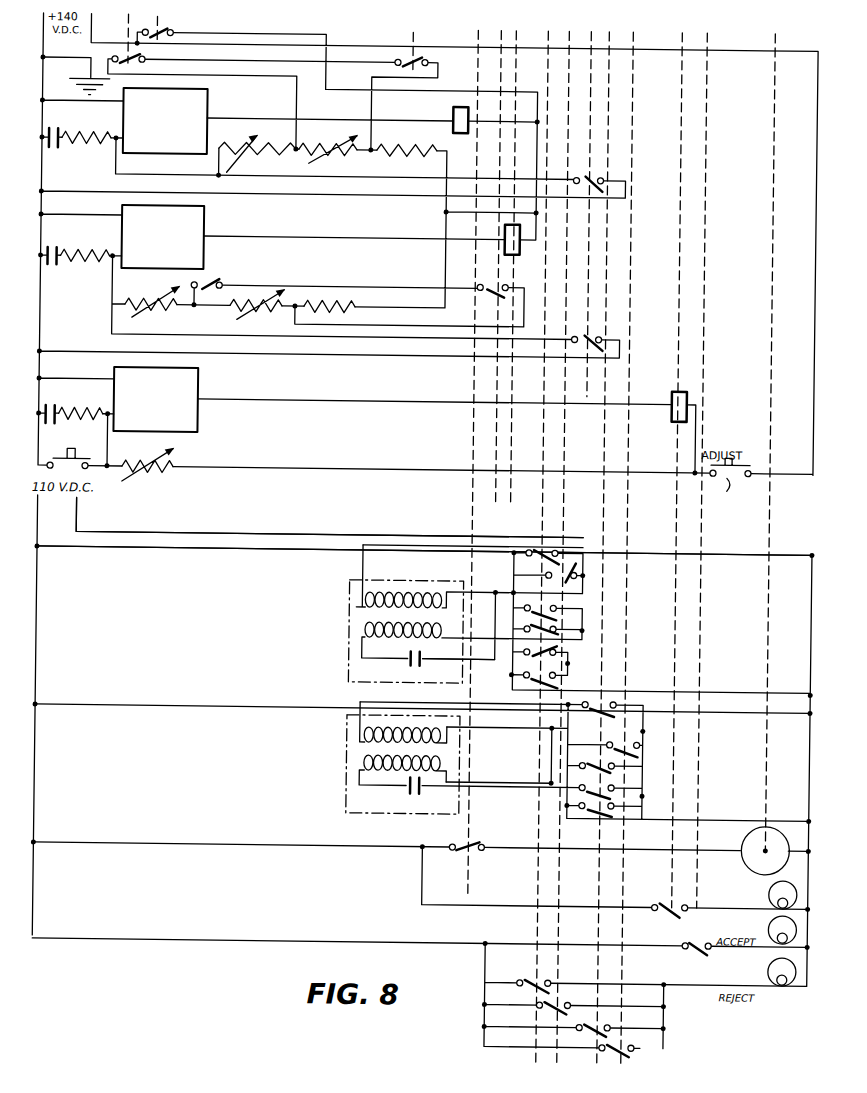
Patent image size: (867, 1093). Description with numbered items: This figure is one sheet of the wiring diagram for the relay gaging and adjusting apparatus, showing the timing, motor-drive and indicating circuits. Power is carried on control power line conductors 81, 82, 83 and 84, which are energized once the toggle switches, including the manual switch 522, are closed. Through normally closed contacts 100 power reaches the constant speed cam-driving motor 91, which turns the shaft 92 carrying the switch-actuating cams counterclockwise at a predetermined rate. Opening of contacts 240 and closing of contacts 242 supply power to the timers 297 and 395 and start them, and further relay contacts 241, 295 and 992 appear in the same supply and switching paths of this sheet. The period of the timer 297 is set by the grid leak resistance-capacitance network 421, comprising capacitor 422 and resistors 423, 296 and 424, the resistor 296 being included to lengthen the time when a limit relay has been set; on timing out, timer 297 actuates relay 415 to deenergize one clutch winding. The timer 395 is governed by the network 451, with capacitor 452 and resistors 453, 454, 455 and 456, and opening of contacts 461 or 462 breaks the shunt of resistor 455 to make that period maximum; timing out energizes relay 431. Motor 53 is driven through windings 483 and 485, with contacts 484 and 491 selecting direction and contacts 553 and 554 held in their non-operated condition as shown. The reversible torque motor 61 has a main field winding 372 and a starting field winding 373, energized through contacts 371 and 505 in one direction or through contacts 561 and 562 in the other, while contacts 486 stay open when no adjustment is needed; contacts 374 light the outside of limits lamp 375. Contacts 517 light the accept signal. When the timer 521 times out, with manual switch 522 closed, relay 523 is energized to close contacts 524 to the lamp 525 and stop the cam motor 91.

The control power line conductor 81 is at (47, 44).
The control power line conductor 82 is at (134, 31).
The control power line conductor 83 is at (62, 517).
The control power line conductor 84 is at (84, 516).
The normally closed contacts 100 is at (484, 848).
The motor 53 is at (352, 592).
The reversible constant speed torque motor 61 is at (350, 795).
The constant speed cam-driving motor 91 is at (754, 836).
The shaft 92 is at (775, 742).
The contacts 240 is at (605, 332).
The relay contact 241 is at (592, 173).
The contacts 242 is at (152, 46).
The relay contact 295 is at (398, 55).
The resistor 296 is at (340, 152).
The timer 297 is at (128, 105).
The contacts 371 is at (648, 742).
The main field winding 372 is at (355, 733).
The starting field winding 373 is at (355, 766).
The contacts 374 is at (652, 1041).
The outside of limits lamp 375 is at (762, 961).
The timer 395 is at (128, 211).
The relay 415 is at (453, 113).
The grid leak resistance-capacitance network 421 is at (110, 149).
The capacitor 422 is at (52, 152).
The resistor 423 is at (265, 137).
The resistor 424 is at (433, 138).
The relay 431 is at (533, 272).
The grid leak resistance-capacitance network 451 is at (72, 270).
The capacitor 452 is at (82, 241).
The resistor 453 is at (74, 260).
The resistor 454 is at (160, 318).
The resistor 455 is at (262, 312).
The resistor 456 is at (348, 297).
The contacts 461 is at (225, 281).
The contacts 462 is at (505, 287).
The motor winding 483 is at (363, 603).
The contacts 484 is at (539, 540).
The motor winding 485 is at (362, 633).
The contacts 486 is at (535, 600).
The contacts 491 is at (567, 560).
The contacts 505 is at (662, 808).
The contacts 517 is at (684, 950).
The timer 521 is at (202, 378).
The manual switch 522 is at (735, 485).
The relay 523 is at (676, 388).
The contacts 524 is at (688, 897).
The lamp 525 is at (782, 878).
The contacts 553 is at (535, 626).
The contacts 554 is at (519, 669).
The contacts 561 is at (622, 762).
The contacts 562 is at (655, 785).
The relay contact 992 is at (577, 988).